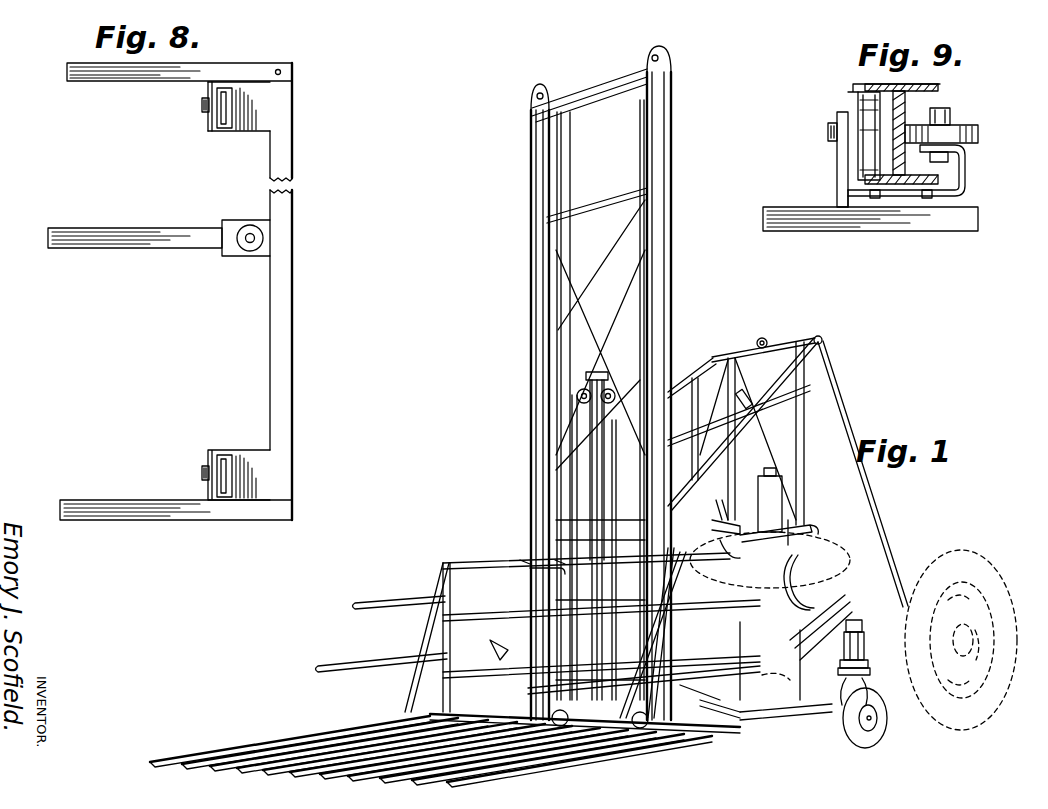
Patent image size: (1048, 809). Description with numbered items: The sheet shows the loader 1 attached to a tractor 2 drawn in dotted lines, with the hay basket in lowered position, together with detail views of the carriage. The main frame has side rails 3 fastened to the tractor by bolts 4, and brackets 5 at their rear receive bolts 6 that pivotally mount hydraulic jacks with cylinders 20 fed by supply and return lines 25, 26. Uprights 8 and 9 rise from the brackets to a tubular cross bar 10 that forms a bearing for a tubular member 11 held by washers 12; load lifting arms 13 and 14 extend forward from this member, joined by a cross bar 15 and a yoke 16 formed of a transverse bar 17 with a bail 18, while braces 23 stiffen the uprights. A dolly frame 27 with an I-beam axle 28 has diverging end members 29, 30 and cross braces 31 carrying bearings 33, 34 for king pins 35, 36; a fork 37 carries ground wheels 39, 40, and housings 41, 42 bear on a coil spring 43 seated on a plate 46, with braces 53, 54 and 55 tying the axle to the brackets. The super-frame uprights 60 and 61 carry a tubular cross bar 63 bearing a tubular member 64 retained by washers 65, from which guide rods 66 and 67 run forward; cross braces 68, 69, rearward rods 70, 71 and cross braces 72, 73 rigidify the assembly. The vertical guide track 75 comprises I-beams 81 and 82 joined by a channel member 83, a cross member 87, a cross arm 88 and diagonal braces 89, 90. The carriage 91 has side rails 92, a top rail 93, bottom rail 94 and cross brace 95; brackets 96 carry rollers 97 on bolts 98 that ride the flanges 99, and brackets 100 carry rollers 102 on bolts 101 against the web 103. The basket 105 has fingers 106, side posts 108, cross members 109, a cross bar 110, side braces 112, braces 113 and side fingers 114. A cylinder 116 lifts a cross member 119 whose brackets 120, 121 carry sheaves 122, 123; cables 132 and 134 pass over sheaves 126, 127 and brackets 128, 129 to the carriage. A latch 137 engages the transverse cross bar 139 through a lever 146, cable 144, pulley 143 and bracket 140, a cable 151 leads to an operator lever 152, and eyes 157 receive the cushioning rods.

In FIG. 1, the loader 1 is at (687, 330).
In FIG. 1, the tractor 2 is at (961, 640).
In FIG. 1, the side rails 3 is at (762, 622).
In FIG. 1, the bolts 4 is at (768, 640).
In FIG. 1, the brackets 5 is at (808, 626).
In FIG. 1, the bolts 6 is at (810, 634).
In FIG. 1, the upright 8 is at (802, 590).
In FIG. 1, the upright 9 is at (718, 540).
In FIG. 1, the tubular cross bar 10 is at (742, 512).
In FIG. 1, the tubular member 11 is at (810, 518).
In FIG. 1, the washers 12 is at (714, 508).
In FIG. 1, the load lifting arm 13 is at (806, 545).
In FIG. 1, the load lifting arm 14 is at (706, 528).
In FIG. 1, the cross bar 15 is at (660, 654).
In FIG. 1, the yoke 16 is at (716, 697).
In FIG. 1, the transverse bar 17 is at (672, 730).
In FIG. 1, the bail 18 is at (690, 740).
In FIG. 1, the cylinders 20 is at (784, 656).
In FIG. 1, the braces 23 is at (786, 534).
In FIG. 1, the supply line 25 is at (798, 578).
In FIG. 1, the return line 26 is at (796, 606).
In FIG. 1, the dolly frame 27 is at (794, 722).
In FIG. 1, the axle 28 is at (766, 728).
In FIG. 1, the axle end member 29 is at (808, 716).
In FIG. 1, the axle end member 30 is at (830, 695).
In FIG. 1, the cross braces 31 is at (808, 664).
In FIG. 1, the steering knuckle bearing 33 is at (862, 634).
In FIG. 1, the steering knuckle bearing 34 is at (495, 652).
In FIG. 1, the king pin 35 is at (860, 624).
In FIG. 1, the king pin 36 is at (492, 640).
In FIG. 1, the fork 37 is at (870, 682).
In FIG. 1, the ground wheel 39 is at (870, 748).
In FIG. 1, the ground wheel 40 is at (494, 700).
In FIG. 1, the housing 41 is at (864, 650).
In FIG. 1, the housing 42 is at (494, 668).
In FIG. 1, the coil spring 43 is at (868, 666).
In FIG. 1, the plate 46 is at (846, 686).
In FIG. 1, the brace 53 is at (850, 616).
In FIG. 1, the brace 54 is at (514, 615).
In FIG. 1, the brace 55 is at (792, 676).
In FIG. 1, the upright 60 is at (804, 445).
In FIG. 1, the upright 61 is at (728, 483).
In FIG. 1, the tubular cross bar 63 is at (756, 343).
In FIG. 1, the tubular member 64 is at (820, 338).
In FIG. 1, the washers 65 is at (713, 356).
In FIG. 1, the guide rod 66 is at (784, 376).
In FIG. 1, the guide rod 67 is at (706, 370).
In FIG. 1, the cross brace 68 is at (770, 410).
In FIG. 1, the cross brace 69 is at (744, 394).
In FIG. 1, the brace rod 70 is at (828, 404).
In FIG. 1, the brace rod 71 is at (750, 380).
In FIG. 1, the cross brace 72 is at (706, 428).
In FIG. 1, the cross brace 73 is at (698, 410).
In FIG. 1, the vertical guide track 75 is at (671, 68).
In FIG. 9, the I-beam 81 is at (936, 86).
In FIG. 1, the I-beam 81 is at (671, 290).
In FIG. 1, the I-beam 82 is at (531, 316).
In FIG. 1, the channel member 83 is at (634, 516).
In FIG. 1, the cross member 87 is at (616, 80).
In FIG. 1, the cross arm 88 is at (622, 196).
In FIG. 1, the diagonal brace 89 is at (604, 352).
In FIG. 1, the diagonal brace 90 is at (598, 360).
In FIG. 8, the carriage 91 is at (292, 67).
In FIG. 9, the carriage 91 is at (972, 231).
In FIG. 8, the side rails 92 is at (292, 290).
In FIG. 8, the top rail 93 is at (67, 73).
In FIG. 9, the top rail 93 is at (802, 231).
In FIG. 8, the bottom rail 94 is at (112, 500).
In FIG. 8, the cross brace 95 is at (147, 248).
In FIG. 8, the brackets 96 is at (258, 131).
In FIG. 9, the brackets 96 is at (837, 183).
In FIG. 1, the brackets 96 is at (530, 576).
In FIG. 8, the rollers 97 is at (228, 128).
In FIG. 9, the rollers 97 is at (858, 155).
In FIG. 8, the bolts 98 is at (202, 108).
In FIG. 9, the bolts 98 is at (828, 132).
In FIG. 9, the flanges 99 is at (860, 84).
In FIG. 1, the flanges 99 is at (557, 352).
In FIG. 8, the brackets 100 is at (250, 256).
In FIG. 9, the brackets 100 is at (965, 196).
In FIG. 9, the bolts 101 is at (950, 115).
In FIG. 9, the rollers 102 is at (978, 133).
In FIG. 9, the web 103 is at (906, 118).
In FIG. 1, the basket 105 is at (396, 701).
In FIG. 1, the fingers 106 is at (252, 748).
In FIG. 1, the side posts 108 is at (446, 593).
In FIG. 1, the cross members 109 is at (490, 616).
In FIG. 1, the cross bar 110 is at (682, 738).
In FIG. 1, the side braces 112 is at (420, 636).
In FIG. 1, the braces 113 is at (500, 710).
In FIG. 1, the side fingers 114 is at (398, 603).
In FIG. 1, the cylinder 116 is at (604, 434).
In FIG. 1, the cross member 119 is at (608, 372).
In FIG. 1, the bracket 120 is at (614, 396).
In FIG. 1, the bracket 121 is at (577, 392).
In FIG. 1, the sheave 122 is at (610, 410).
In FIG. 1, the sheave 123 is at (580, 402).
In FIG. 1, the sheave 126 is at (640, 730).
In FIG. 1, the sheave 127 is at (560, 728).
In FIG. 1, the bracket 128 is at (652, 46).
In FIG. 1, the bracket 129 is at (543, 84).
In FIG. 1, the cable 132 is at (616, 487).
In FIG. 1, the cable 134 is at (572, 486).
In FIG. 1, the latch 137 is at (530, 560).
In FIG. 1, the transverse cross bar 139 is at (486, 563).
In FIG. 1, the bracket 140 is at (720, 709).
In FIG. 1, the pulley 143 is at (562, 106).
In FIG. 1, the cable 144 is at (570, 164).
In FIG. 1, the lever 146 is at (568, 577).
In FIG. 1, the cable 151 is at (640, 606).
In FIG. 1, the lever 152 is at (600, 614).
In FIG. 8, the eyes 157 is at (278, 69).